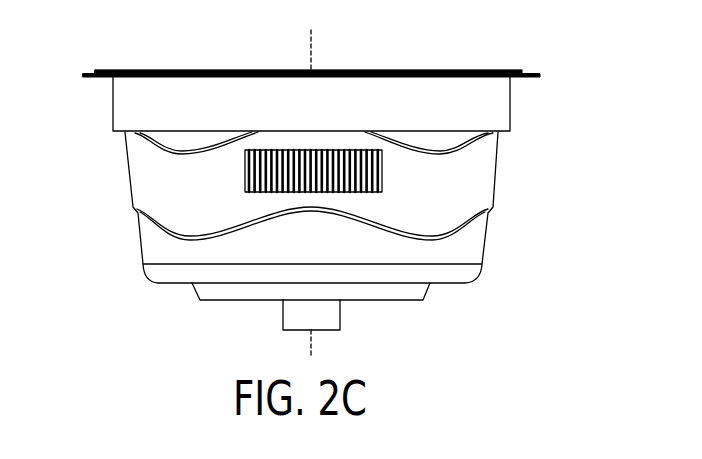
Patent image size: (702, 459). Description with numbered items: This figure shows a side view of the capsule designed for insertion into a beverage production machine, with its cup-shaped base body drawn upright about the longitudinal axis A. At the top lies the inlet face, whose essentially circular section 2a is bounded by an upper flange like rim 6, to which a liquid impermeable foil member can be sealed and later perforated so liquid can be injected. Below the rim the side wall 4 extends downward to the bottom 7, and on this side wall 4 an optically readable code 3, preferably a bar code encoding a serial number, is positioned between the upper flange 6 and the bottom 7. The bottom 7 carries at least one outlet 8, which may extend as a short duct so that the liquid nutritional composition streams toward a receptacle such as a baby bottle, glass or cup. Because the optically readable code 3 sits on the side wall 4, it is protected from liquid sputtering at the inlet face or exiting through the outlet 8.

The essentially circular section 2a is at (247, 70).
The longitudinal axis A is at (310, 182).
The upper flange like rim 6 is at (523, 72).
The optically readable code 3 is at (247, 170).
The side wall 4 is at (482, 173).
The bottom 7 is at (427, 290).
The outlet 8 is at (288, 318).